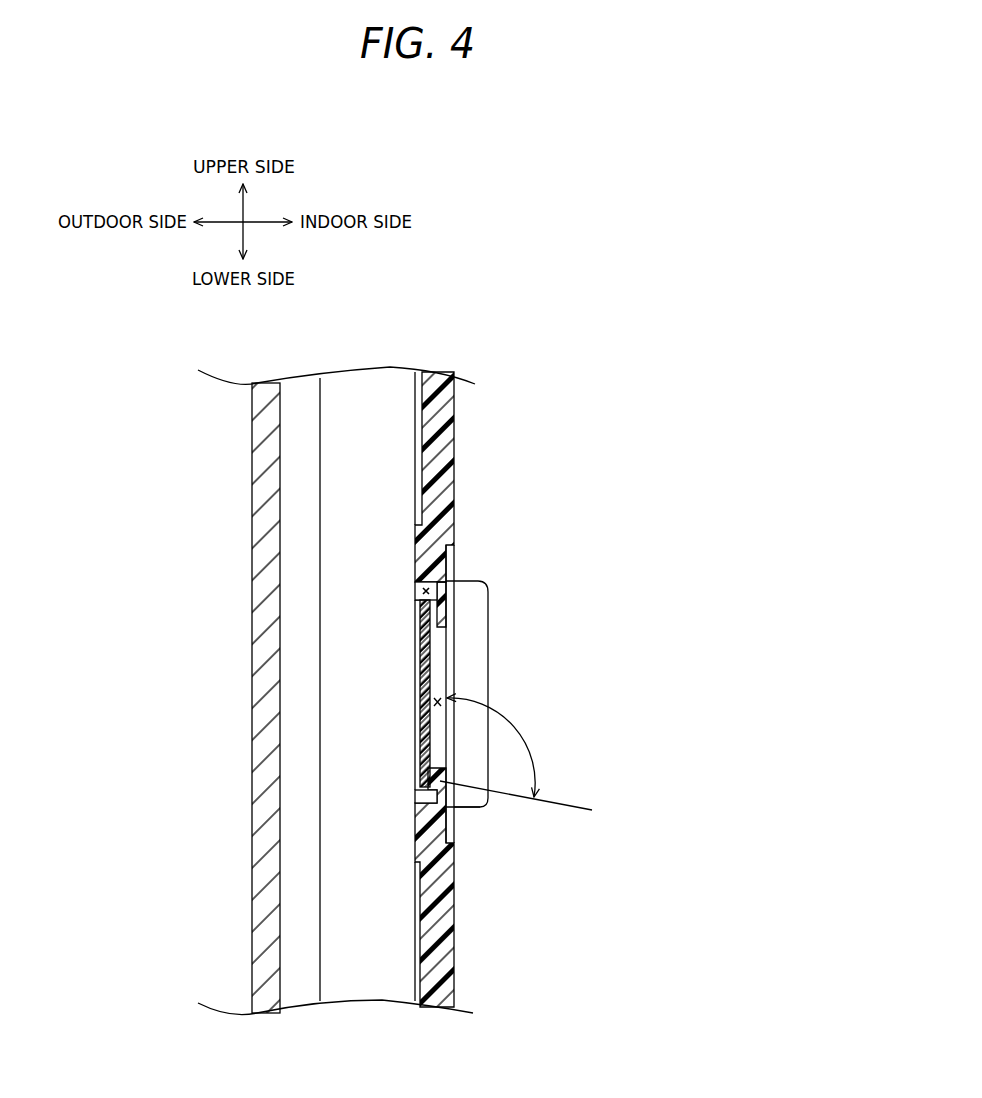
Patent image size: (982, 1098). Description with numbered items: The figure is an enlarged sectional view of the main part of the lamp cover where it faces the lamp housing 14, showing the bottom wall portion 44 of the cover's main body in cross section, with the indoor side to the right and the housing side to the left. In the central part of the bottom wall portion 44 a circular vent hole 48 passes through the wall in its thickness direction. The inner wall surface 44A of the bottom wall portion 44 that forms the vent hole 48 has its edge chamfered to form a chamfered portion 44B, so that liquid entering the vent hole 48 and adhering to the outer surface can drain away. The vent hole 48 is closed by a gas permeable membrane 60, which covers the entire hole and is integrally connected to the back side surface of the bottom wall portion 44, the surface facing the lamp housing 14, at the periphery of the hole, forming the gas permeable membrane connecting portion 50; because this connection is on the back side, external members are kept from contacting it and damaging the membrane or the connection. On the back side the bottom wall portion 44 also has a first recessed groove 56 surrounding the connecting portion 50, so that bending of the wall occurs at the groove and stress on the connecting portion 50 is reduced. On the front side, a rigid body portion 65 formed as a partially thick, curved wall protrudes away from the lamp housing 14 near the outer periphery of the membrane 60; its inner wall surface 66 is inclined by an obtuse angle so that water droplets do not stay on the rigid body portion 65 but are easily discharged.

The lamp housing 14 is at (245, 433).
The bottom wall portion 44 is at (387, 689).
The inner wall surface 44A is at (420, 637).
The chamfered portion 44B is at (447, 604).
The vent hole 48 is at (435, 707).
The gas permeable membrane connecting portion 50 is at (420, 777).
The first recessed groove 56 is at (415, 595).
The gas permeable membrane 60 is at (418, 690).
The rigid body portion 65 is at (493, 660).
The inner wall surface of rigid body portion 66 is at (455, 790).